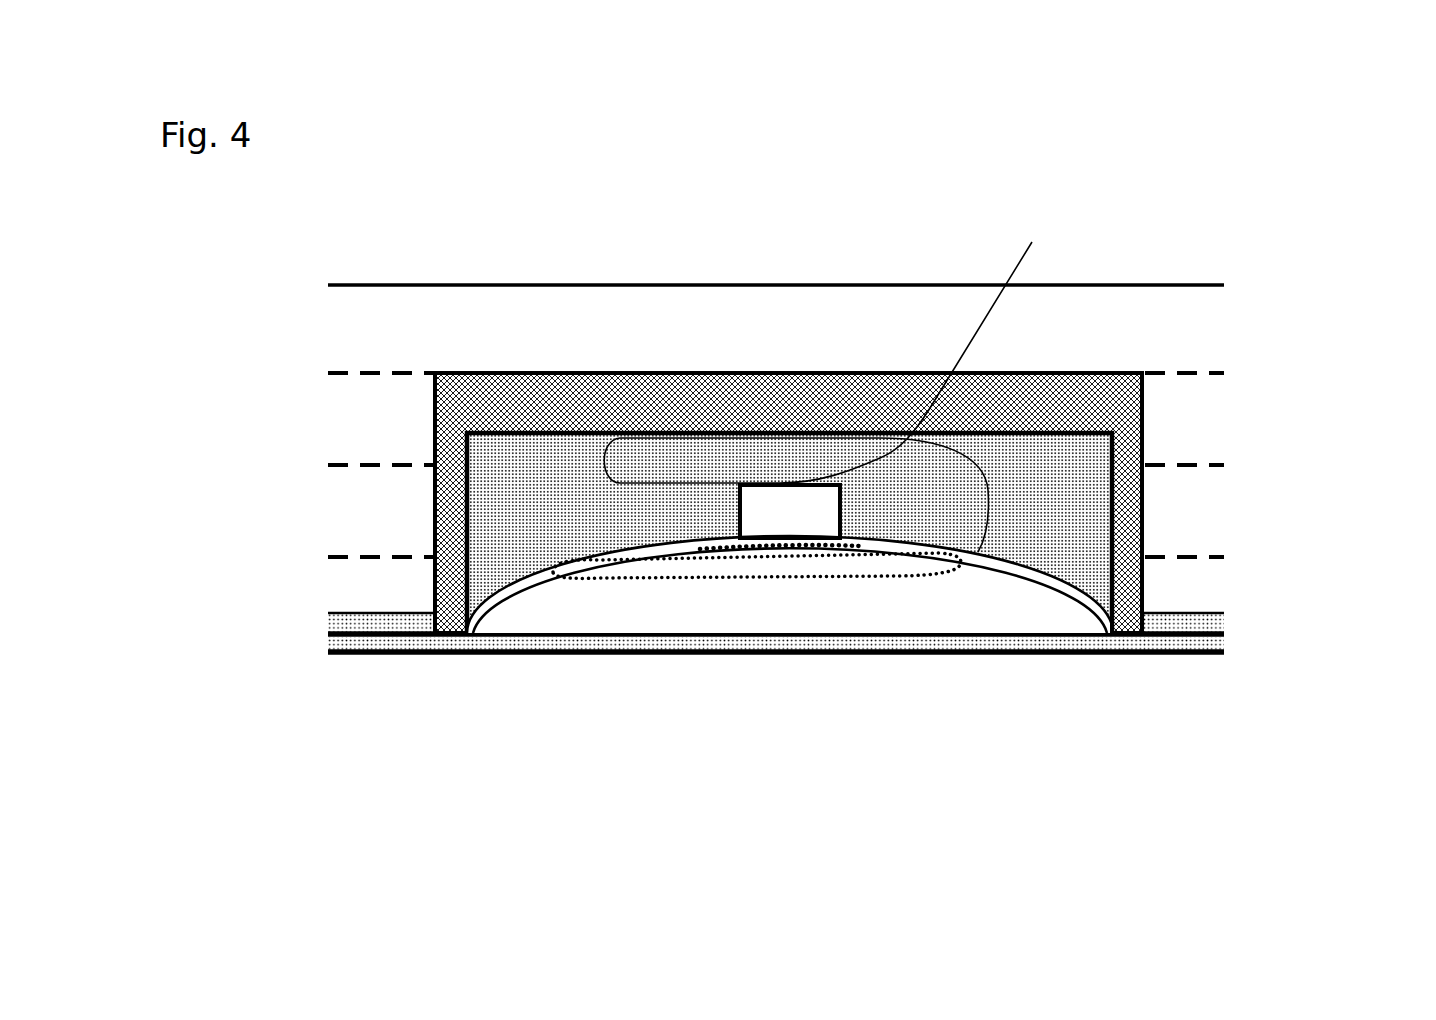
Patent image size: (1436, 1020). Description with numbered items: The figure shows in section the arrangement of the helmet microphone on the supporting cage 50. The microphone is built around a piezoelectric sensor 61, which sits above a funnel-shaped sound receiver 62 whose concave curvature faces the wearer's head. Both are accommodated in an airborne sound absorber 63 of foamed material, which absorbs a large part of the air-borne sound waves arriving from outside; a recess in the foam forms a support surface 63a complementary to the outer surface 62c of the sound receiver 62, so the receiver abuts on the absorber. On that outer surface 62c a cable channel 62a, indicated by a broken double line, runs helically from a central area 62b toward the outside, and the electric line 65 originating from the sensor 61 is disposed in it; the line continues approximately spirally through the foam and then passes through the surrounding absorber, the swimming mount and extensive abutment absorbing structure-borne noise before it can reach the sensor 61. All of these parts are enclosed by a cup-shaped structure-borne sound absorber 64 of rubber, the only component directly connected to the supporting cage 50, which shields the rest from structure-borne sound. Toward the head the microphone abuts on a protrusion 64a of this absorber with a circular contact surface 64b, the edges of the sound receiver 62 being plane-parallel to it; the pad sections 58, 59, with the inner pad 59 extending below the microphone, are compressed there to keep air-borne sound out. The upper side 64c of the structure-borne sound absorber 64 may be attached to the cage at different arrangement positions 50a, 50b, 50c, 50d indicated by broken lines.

The supporting cage 50 is at (767, 335).
The arrangement position 50a is at (370, 373).
The arrangement position 50b is at (370, 465).
The arrangement position 50c is at (370, 557).
The arrangement position 50d is at (370, 613).
The pad section 58 is at (1187, 622).
The inner pad 59 is at (1195, 652).
The piezoelectric sensor 61 is at (774, 527).
The sound receiver 62 is at (1083, 593).
The cable channel 62a is at (767, 583).
The central area 62b is at (712, 533).
The outer surface 62c is at (590, 613).
The airborne sound absorber 63 is at (1039, 484).
The support surface 63a is at (1040, 603).
The structure-borne sound absorber 64 is at (1130, 502).
The protrusion 64a is at (1117, 635).
The contact surface 64b is at (1127, 620).
The upper side 64c is at (1130, 372).
The electric line 65 is at (1017, 272).